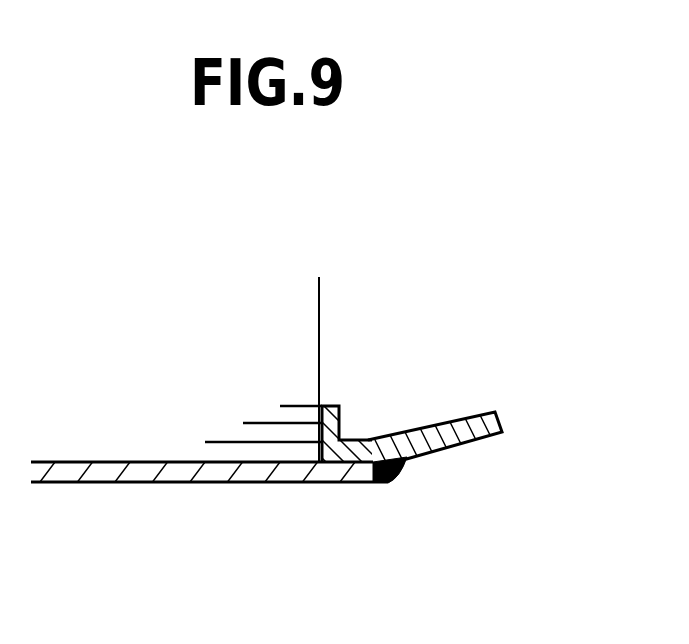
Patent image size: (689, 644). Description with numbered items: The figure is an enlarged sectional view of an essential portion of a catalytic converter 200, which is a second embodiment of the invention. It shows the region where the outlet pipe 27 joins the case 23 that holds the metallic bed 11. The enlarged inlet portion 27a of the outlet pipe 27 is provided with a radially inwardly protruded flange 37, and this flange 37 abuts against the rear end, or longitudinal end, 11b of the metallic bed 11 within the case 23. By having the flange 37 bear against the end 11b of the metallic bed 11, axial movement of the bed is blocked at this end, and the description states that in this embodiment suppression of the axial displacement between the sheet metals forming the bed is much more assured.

The catalytic converter 200 is at (572, 193).
The metallic bed 11 is at (137, 368).
The rear end of metallic bed 11b is at (323, 333).
The enlarged inlet portion 27a is at (318, 363).
The radially inwardly protruded flange 37 is at (330, 421).
The outlet pipe 27 is at (455, 446).
The case 23 is at (182, 482).